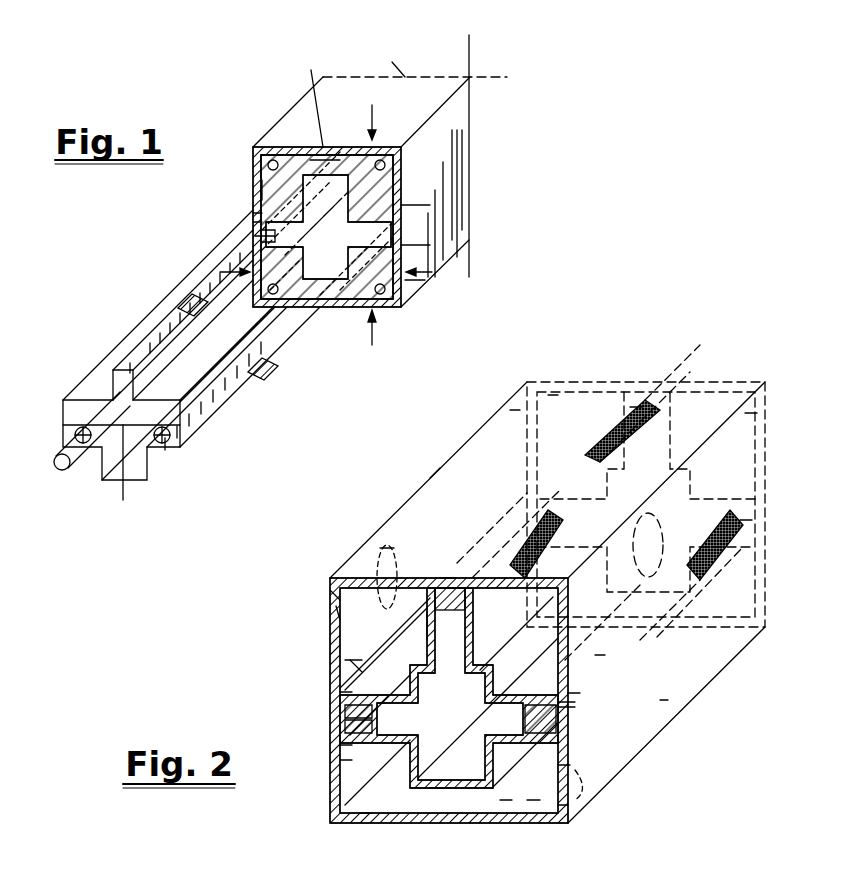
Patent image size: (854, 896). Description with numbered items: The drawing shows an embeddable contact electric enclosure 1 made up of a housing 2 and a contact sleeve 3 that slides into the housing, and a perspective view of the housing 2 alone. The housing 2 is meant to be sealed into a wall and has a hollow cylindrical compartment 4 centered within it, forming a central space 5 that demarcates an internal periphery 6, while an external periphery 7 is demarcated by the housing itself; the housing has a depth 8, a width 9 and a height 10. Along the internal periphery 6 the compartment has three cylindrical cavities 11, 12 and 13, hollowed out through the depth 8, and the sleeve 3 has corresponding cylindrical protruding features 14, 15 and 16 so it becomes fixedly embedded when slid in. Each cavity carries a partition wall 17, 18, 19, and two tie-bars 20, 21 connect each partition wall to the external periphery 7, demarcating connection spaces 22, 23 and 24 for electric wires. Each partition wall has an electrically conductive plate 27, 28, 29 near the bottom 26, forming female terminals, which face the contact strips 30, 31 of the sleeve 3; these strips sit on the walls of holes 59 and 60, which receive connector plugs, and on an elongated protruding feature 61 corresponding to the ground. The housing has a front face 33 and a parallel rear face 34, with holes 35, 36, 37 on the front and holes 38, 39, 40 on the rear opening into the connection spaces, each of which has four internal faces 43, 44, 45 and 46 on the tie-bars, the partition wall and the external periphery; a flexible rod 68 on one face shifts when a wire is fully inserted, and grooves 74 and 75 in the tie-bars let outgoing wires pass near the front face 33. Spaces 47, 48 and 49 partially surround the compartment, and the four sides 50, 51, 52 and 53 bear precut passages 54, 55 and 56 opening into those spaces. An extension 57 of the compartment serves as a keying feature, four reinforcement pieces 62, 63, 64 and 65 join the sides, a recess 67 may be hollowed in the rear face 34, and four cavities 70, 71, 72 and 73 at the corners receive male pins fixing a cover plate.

In FIG. 1, the embeddable contact electric enclosure 1 is at (322, 393).
In FIG. 1, the housing 2 is at (470, 100).
In FIG. 1, the contact sleeve 3 is at (157, 337).
In FIG. 1, the cylindrical compartment 4 is at (400, 225).
In FIG. 1, the central space 5 is at (262, 185).
In FIG. 1, the internal periphery 6 is at (400, 205).
In FIG. 1, the external periphery 7 is at (253, 222).
In FIG. 1, the depth 8 is at (392, 62).
In FIG. 1, the width 9 is at (440, 270).
In FIG. 1, the height 10 is at (385, 345).
In FIG. 1, the cylindrical cavity 11 is at (312, 95).
In FIG. 2, the cylindrical cavity 11 is at (355, 665).
In FIG. 1, the cylindrical cavity 12 is at (410, 280).
In FIG. 2, the cylindrical cavity 12 is at (573, 813).
In FIG. 1, the cylindrical cavity 13 is at (262, 213).
In FIG. 2, the cylindrical cavity 13 is at (332, 760).
In FIG. 1, the cylindrical protruding feature 14 is at (140, 355).
In FIG. 1, the cylindrical protruding feature 15 is at (196, 405).
In FIG. 1, the cylindrical protruding feature 16 is at (100, 395).
In FIG. 1, the partition wall 17 is at (400, 175).
In FIG. 1, the partition wall 18 is at (400, 245).
In FIG. 1, the partition wall 19 is at (262, 236).
In FIG. 1, the tie-bar 20 is at (330, 157).
In FIG. 1, the tie-bar 21 is at (350, 147).
In FIG. 2, the connection space 22 is at (425, 618).
In FIG. 2, the connection space 23 is at (573, 707).
In FIG. 2, the connection space 24 is at (350, 712).
In FIG. 1, the bottom 26 is at (440, 77).
In FIG. 2, the bottom 26 is at (697, 407).
In FIG. 2, the electrically conductive plate 27 is at (610, 420).
In FIG. 2, the electrically conductive plate 28 is at (750, 487).
In FIG. 2, the electrically conductive plate 29 is at (537, 490).
In FIG. 1, the contact strip 30 is at (192, 300).
In FIG. 1, the contact strip 31 is at (262, 378).
In FIG. 2, the front face 33 is at (457, 805).
In FIG. 2, the rear face 34 is at (737, 432).
In FIG. 2, the hole 35 is at (333, 595).
In FIG. 2, the hole 36 is at (572, 720).
In FIG. 2, the hole 37 is at (350, 727).
In FIG. 2, the hole 38 is at (634, 406).
In FIG. 2, the hole 39 is at (747, 520).
In FIG. 2, the hole 40 is at (520, 500).
In FIG. 2, the internal face 43 is at (387, 550).
In FIG. 2, the internal face 44 is at (457, 577).
In FIG. 2, the internal face 45 is at (449, 696).
In FIG. 2, the internal face 46 is at (447, 577).
In FIG. 2, the space 47 is at (575, 693).
In FIG. 2, the space 48 is at (353, 663).
In FIG. 2, the space 49 is at (507, 800).
In FIG. 2, the side 50 is at (553, 395).
In FIG. 2, the side 51 is at (750, 413).
In FIG. 2, the side 52 is at (663, 700).
In FIG. 2, the side 53 is at (515, 410).
In FIG. 2, the precut passage 54 is at (703, 497).
In FIG. 2, the precut passage 55 is at (597, 790).
In FIG. 2, the precut passage 56 is at (380, 543).
In FIG. 1, the extension 57 is at (345, 305).
In FIG. 2, the extension 57 is at (440, 790).
In FIG. 1, the hole 59 is at (162, 445).
In FIG. 1, the hole 60 is at (117, 400).
In FIG. 1, the elongated protruding feature 61 is at (62, 470).
In FIG. 2, the reinforcement piece 62 is at (368, 822).
In FIG. 2, the reinforcement piece 63 is at (337, 613).
In FIG. 2, the reinforcement piece 64 is at (600, 655).
In FIG. 2, the reinforcement piece 65 is at (533, 800).
In FIG. 2, the recess 67 is at (340, 692).
In FIG. 2, the flexible rod 68 is at (332, 748).
In FIG. 1, the cavity 70 is at (268, 160).
In FIG. 1, the cavity 71 is at (397, 147).
In FIG. 1, the cavity 72 is at (400, 310).
In FIG. 1, the cavity 73 is at (272, 312).
In FIG. 2, the groove 74 is at (575, 702).
In FIG. 2, the groove 75 is at (567, 765).